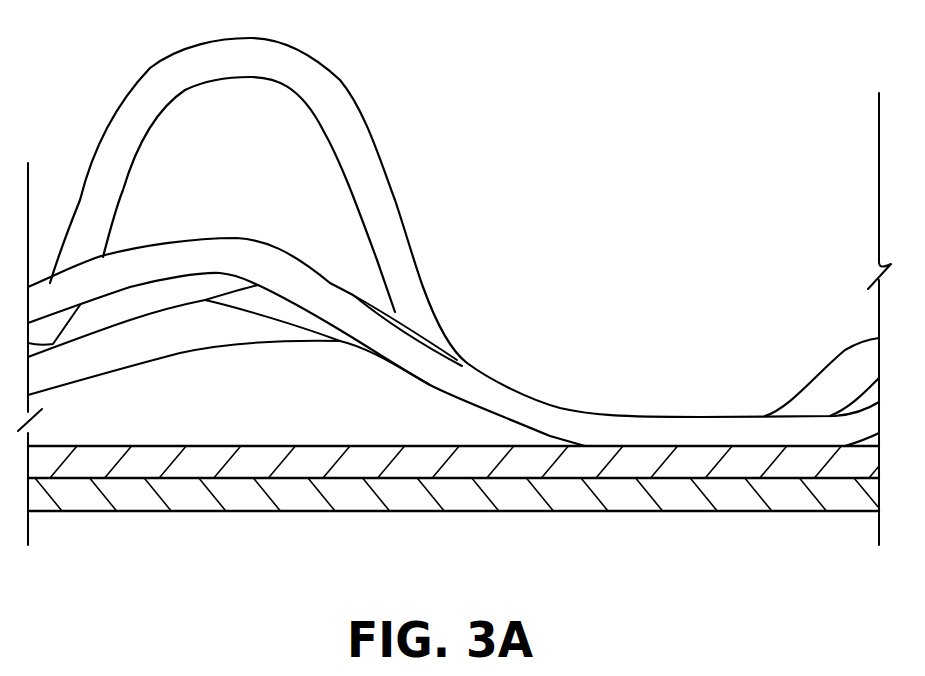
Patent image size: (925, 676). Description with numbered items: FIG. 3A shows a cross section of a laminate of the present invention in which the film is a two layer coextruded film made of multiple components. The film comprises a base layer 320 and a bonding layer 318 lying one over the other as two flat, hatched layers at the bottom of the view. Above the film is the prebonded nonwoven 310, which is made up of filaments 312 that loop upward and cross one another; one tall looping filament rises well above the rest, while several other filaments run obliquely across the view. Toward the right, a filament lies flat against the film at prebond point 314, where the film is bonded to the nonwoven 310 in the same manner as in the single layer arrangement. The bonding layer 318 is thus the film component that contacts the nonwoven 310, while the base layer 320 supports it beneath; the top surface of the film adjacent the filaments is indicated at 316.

The nonwoven 310 is at (571, 224).
The filaments 312 is at (235, 238).
The prebond point 314 is at (670, 415).
The adhesive layer 316 is at (218, 446).
The bonding layer 318 is at (140, 465).
The base layer 320 is at (248, 502).